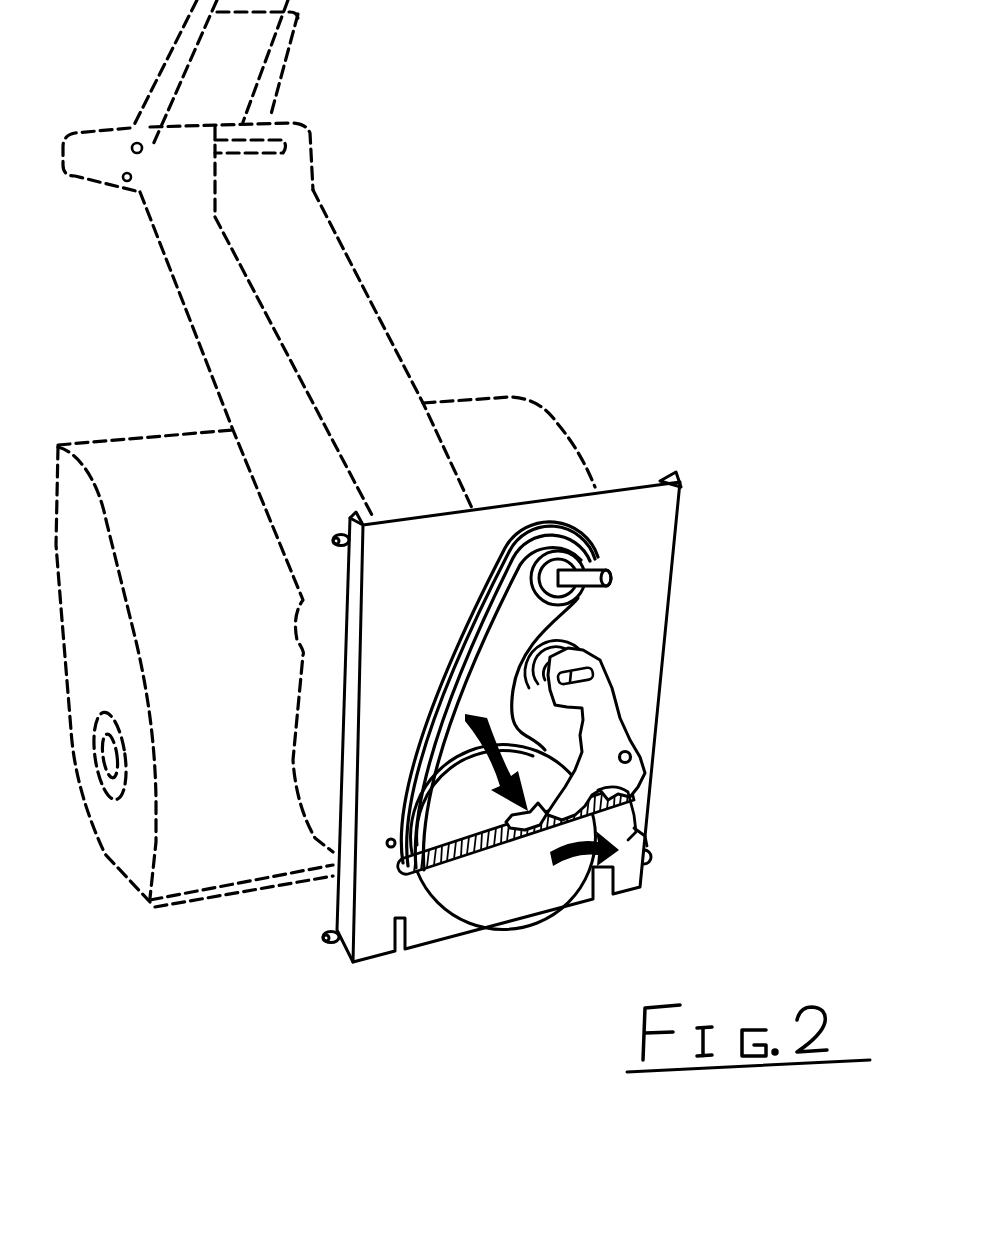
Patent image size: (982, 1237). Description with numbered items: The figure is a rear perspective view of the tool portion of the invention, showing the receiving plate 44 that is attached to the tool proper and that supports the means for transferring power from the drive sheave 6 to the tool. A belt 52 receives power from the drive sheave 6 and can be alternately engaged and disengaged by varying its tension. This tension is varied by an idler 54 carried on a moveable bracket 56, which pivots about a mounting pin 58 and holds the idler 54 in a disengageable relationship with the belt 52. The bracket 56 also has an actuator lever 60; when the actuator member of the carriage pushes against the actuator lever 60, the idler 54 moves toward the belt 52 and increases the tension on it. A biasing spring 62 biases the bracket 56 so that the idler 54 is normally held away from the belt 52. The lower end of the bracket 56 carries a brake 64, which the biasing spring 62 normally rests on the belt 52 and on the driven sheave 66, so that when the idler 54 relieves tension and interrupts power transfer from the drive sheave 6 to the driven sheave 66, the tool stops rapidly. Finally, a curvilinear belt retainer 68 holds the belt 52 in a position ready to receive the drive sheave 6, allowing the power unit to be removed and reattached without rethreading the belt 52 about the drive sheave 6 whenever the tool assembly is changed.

The drive sheave 6 is at (603, 560).
The receiving plate 44 is at (635, 513).
The belt 52 is at (570, 613).
The idler 54 is at (580, 653).
The bracket 56 is at (607, 720).
The mounting pin 58 is at (633, 755).
The actuator lever 60 is at (640, 805).
The biasing spring 62 is at (640, 832).
The brake 64 is at (645, 840).
The driven sheave 66 is at (543, 877).
The curvilinear belt retainer 68 is at (545, 522).